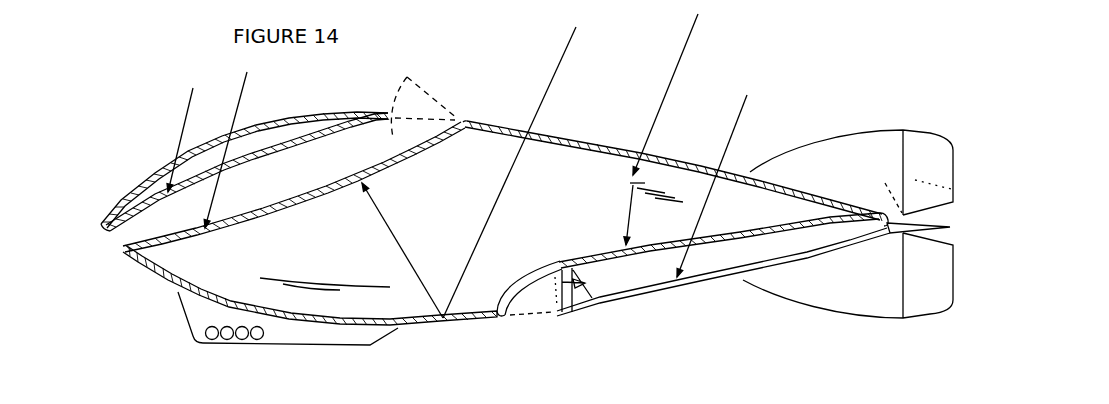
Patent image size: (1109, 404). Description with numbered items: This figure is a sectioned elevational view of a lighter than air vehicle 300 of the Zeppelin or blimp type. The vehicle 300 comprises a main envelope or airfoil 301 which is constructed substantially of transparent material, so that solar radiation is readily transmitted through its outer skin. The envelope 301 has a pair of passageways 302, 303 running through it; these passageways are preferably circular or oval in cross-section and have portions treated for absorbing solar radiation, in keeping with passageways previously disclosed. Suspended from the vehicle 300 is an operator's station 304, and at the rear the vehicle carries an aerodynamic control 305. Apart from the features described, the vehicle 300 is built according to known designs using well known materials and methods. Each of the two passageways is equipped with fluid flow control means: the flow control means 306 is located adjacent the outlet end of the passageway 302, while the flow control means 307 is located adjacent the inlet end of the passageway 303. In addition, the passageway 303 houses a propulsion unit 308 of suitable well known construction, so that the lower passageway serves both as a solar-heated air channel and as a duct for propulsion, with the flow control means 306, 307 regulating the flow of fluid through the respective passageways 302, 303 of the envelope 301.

The lighter than air vehicle 300 is at (162, 110).
The main envelope or airfoil 301 is at (563, 192).
The passageway 302 is at (166, 222).
The passageway 303 is at (723, 258).
The operator's station 304 is at (318, 335).
The aerodynamic control 305 is at (957, 230).
The fluid flow control means 306 is at (438, 120).
The fluid flow control means 307 is at (523, 303).
The propulsion unit 308 is at (580, 288).